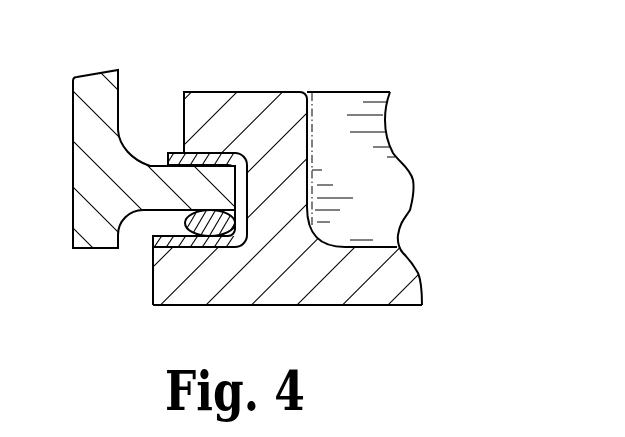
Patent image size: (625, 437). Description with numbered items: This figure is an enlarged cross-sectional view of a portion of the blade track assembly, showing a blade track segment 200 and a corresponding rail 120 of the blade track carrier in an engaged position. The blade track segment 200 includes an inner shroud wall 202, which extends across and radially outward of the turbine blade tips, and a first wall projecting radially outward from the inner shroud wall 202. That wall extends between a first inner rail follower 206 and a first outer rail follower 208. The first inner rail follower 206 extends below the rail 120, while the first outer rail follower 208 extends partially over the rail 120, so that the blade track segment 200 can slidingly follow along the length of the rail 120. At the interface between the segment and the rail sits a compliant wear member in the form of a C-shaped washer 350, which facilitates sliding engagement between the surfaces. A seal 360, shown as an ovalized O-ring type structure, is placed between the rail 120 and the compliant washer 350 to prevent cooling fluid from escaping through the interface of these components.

The rail 120 is at (175, 192).
The blade track segment 200 is at (387, 282).
The inner shroud wall 202 is at (353, 305).
The first inner rail follower 206 is at (158, 280).
The first outer rail follower 208 is at (207, 100).
The C-shaped washer 350 is at (177, 152).
The seal 360 is at (187, 213).